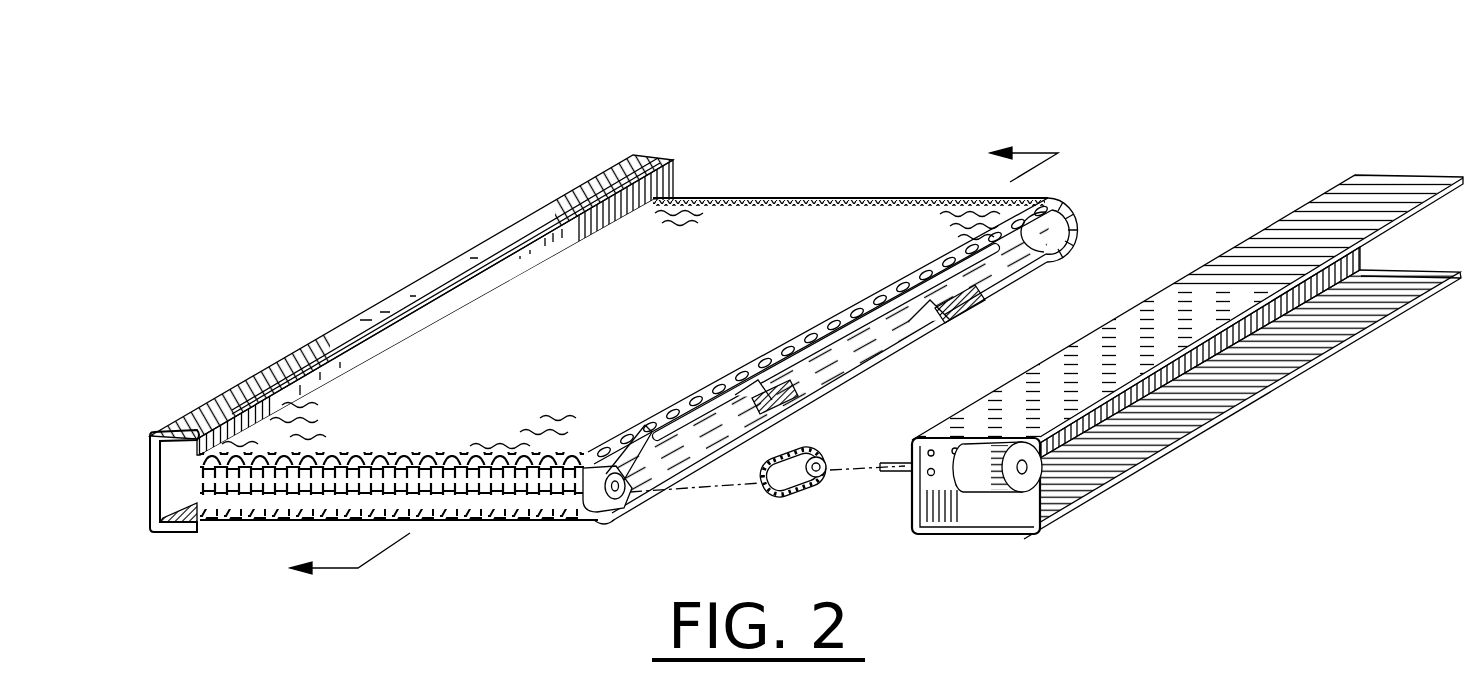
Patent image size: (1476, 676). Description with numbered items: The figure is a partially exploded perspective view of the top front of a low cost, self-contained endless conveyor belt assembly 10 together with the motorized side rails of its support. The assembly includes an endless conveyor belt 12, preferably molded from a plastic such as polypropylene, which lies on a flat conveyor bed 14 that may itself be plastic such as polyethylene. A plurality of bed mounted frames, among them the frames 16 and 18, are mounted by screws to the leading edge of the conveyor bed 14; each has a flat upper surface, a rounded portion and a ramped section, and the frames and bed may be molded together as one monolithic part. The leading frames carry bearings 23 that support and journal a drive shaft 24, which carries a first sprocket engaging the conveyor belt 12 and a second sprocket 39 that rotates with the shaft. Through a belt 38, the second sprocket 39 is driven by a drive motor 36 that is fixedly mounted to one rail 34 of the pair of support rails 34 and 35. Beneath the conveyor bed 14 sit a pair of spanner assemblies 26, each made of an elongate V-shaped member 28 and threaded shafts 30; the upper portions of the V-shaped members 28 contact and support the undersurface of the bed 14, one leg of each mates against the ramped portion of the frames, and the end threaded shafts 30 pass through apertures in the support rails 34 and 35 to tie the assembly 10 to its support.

The endless conveyor belt assembly 10 is at (806, 316).
The endless conveyor belt 12 is at (226, 520).
The conveyor bed 14 is at (830, 318).
The bed mounted frame 16 is at (829, 400).
The bed mounted frame 18 is at (1066, 201).
The bearing 23 is at (597, 521).
The drive shaft 24 is at (578, 462).
The spanner assembly 26 is at (798, 402).
The V-shaped member 28 is at (748, 394).
The threaded shaft 30 is at (706, 406).
The support rail 34 is at (1320, 193).
The support rail 35 is at (680, 150).
The drive motor 36 is at (1032, 480).
The belt 38 is at (788, 494).
The second sprocket 39 is at (606, 472).